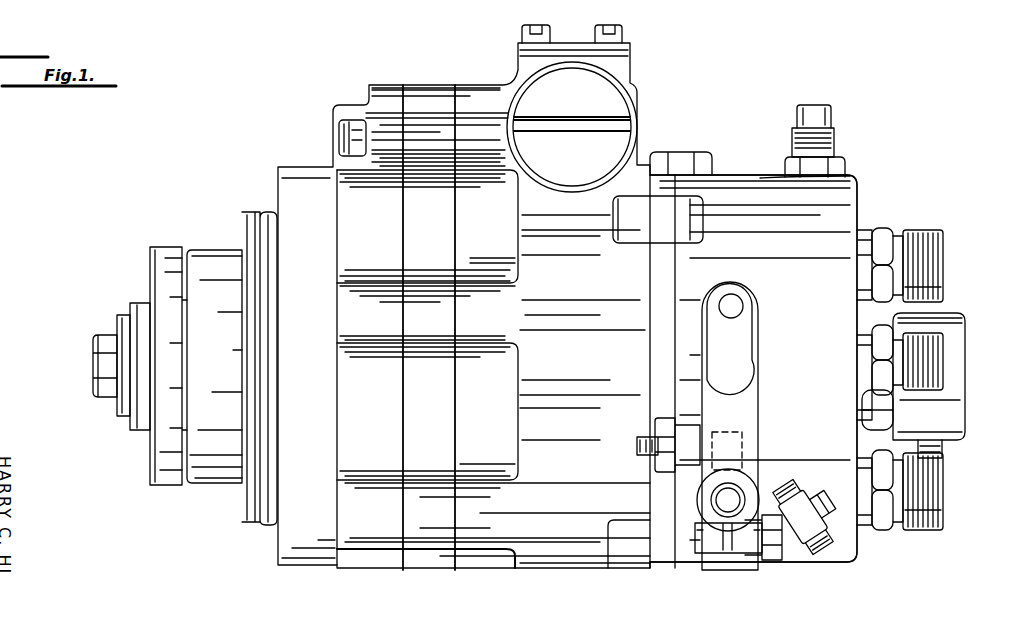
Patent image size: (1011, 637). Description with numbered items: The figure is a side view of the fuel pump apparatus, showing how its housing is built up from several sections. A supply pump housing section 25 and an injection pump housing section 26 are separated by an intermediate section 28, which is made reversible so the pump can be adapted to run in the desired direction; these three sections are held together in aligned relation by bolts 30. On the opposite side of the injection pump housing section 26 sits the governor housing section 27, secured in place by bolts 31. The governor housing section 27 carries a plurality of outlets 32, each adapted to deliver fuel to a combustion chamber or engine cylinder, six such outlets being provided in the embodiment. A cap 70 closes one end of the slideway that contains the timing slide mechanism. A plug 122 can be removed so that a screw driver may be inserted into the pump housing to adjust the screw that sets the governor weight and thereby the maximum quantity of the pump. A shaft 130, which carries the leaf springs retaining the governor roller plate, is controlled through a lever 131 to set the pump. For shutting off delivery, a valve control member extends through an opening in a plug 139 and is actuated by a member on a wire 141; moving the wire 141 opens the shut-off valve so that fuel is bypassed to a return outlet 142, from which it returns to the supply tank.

The supply pump housing section 25 is at (252, 212).
The injection pump housing section 26 is at (480, 100).
The governor housing section 27 is at (857, 185).
The intermediate section 28 is at (422, 92).
The bolts 30 is at (352, 124).
The bolts 31 is at (688, 217).
The outlets 32 is at (918, 240).
The cap 70 is at (608, 97).
The plug 122 is at (684, 160).
The shaft 130 is at (725, 500).
The lever 131 is at (745, 320).
The plug 139 is at (872, 415).
The wire 141 is at (900, 305).
The return outlet 142 is at (830, 112).